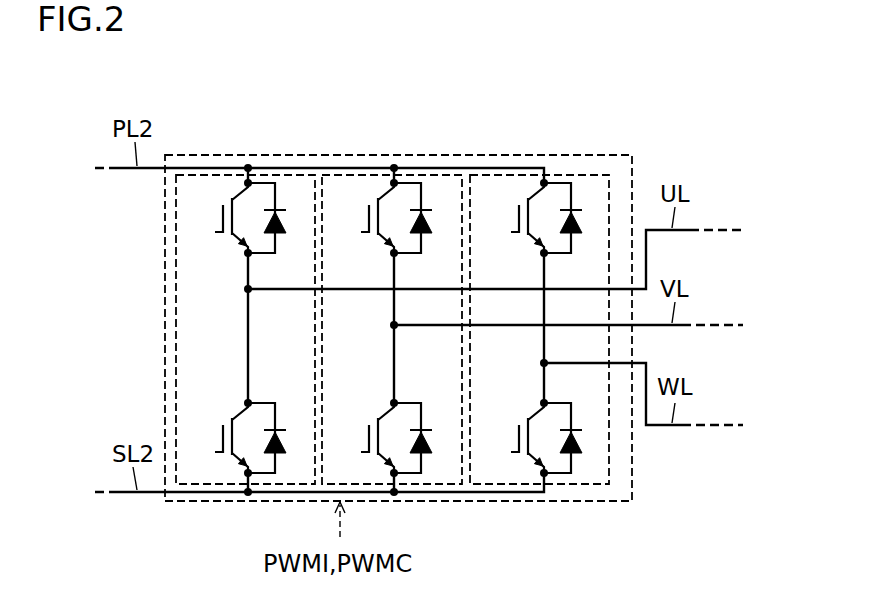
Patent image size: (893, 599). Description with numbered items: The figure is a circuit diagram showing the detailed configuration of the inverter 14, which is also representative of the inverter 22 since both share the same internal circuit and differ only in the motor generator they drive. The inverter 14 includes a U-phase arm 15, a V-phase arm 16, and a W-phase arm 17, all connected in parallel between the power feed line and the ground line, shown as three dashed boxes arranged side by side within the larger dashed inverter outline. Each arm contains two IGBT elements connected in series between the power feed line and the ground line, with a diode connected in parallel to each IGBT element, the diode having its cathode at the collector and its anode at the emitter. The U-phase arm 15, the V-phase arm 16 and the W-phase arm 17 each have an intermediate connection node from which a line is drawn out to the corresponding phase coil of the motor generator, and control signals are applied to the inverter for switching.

The inverter 14 is at (624, 144).
The inverter 22 is at (430, 291).
The U-phase arm 15 is at (288, 175).
The V-phase arm 16 is at (435, 175).
The W-phase arm 17 is at (583, 175).